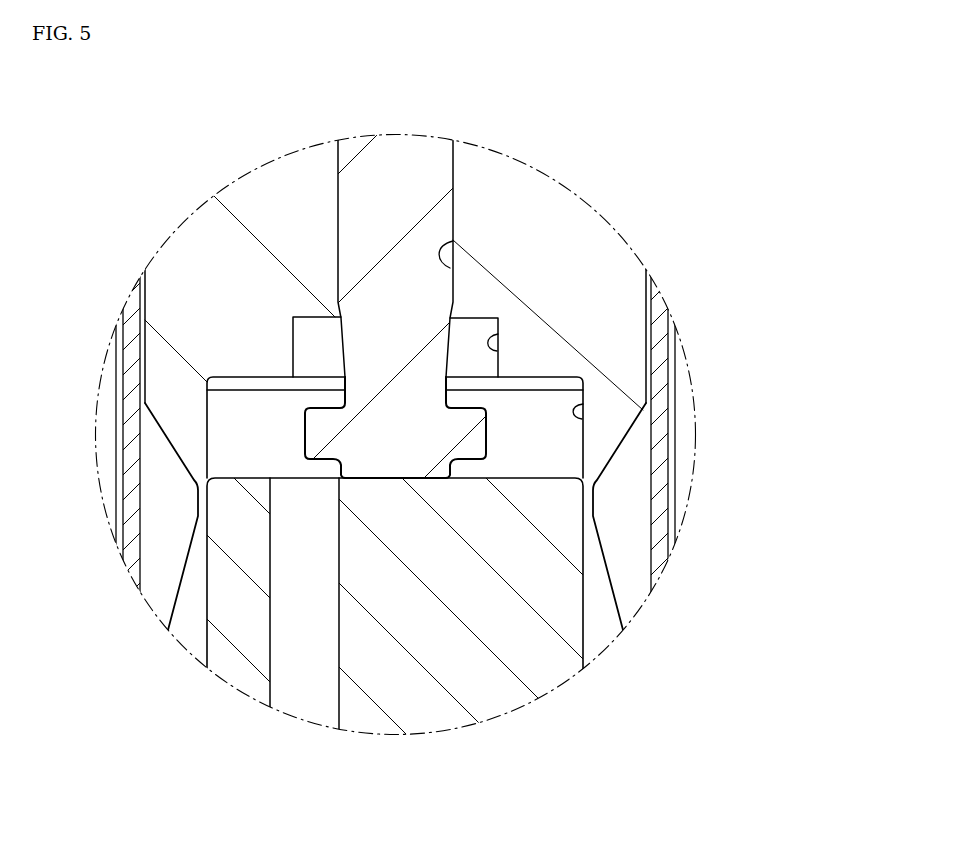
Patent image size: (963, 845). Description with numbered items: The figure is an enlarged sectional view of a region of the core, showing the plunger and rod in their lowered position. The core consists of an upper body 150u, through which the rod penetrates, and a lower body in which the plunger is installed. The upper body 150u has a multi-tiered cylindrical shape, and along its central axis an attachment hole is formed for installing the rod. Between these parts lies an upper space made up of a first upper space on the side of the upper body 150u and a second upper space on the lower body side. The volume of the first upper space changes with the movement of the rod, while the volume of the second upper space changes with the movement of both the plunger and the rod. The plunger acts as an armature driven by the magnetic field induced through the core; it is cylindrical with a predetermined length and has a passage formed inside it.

The upper body 150u is at (257, 195).